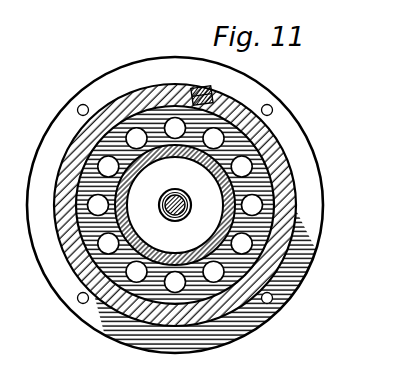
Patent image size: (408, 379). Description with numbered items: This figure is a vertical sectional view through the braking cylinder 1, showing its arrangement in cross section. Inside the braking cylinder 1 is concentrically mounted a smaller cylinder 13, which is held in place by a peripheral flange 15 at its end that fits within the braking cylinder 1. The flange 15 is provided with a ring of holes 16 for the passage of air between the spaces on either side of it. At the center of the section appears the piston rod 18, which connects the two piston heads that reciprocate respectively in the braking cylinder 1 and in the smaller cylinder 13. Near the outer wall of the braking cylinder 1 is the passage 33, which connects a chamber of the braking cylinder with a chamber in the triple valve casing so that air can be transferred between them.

The braking cylinder 1 is at (61, 157).
The smaller cylinder 13 is at (215, 238).
The peripheral flange 15 is at (254, 183).
The holes 16 is at (243, 165).
The piston rod 18 is at (198, 190).
The passage 33 is at (201, 88).